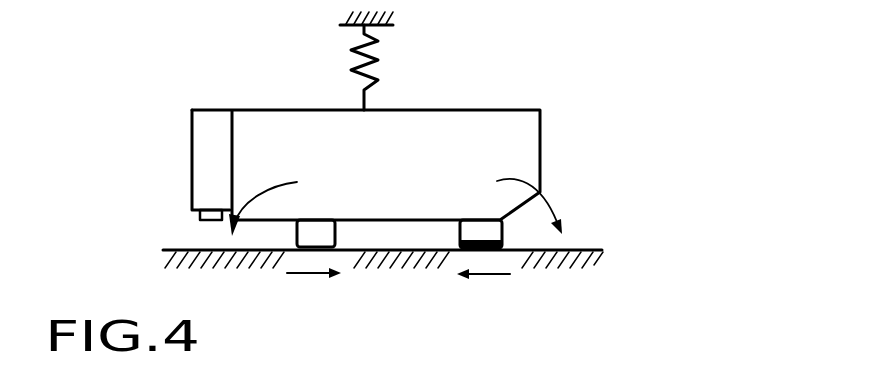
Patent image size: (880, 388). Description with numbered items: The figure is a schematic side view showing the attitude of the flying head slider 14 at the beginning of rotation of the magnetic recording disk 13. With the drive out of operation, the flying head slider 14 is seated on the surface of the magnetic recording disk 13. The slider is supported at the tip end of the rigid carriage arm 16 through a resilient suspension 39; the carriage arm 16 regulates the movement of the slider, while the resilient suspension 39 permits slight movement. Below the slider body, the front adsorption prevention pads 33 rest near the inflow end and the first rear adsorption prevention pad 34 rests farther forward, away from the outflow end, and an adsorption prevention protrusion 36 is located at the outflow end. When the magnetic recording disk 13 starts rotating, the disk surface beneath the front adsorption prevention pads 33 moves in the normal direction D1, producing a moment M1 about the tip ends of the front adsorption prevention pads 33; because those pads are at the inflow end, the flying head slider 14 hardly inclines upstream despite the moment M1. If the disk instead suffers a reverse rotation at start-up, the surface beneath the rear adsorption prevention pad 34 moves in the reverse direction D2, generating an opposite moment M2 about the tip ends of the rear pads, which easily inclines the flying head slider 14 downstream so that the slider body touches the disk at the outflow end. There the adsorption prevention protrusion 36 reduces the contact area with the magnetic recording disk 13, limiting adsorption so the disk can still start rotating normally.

The magnetic recording disk 13 is at (170, 250).
The flying head slider 14 is at (505, 109).
The carriage arm 16 is at (352, 30).
The front adsorption prevention pads 33 is at (460, 232).
The first rear adsorption prevention pad 34 is at (336, 236).
The adsorption prevention protrusion 36 is at (200, 216).
The resilient suspension 39 is at (374, 50).
The moment M1 is at (543, 198).
The moment M2 is at (278, 182).
The normal direction D1 is at (487, 275).
The reverse direction D2 is at (302, 275).